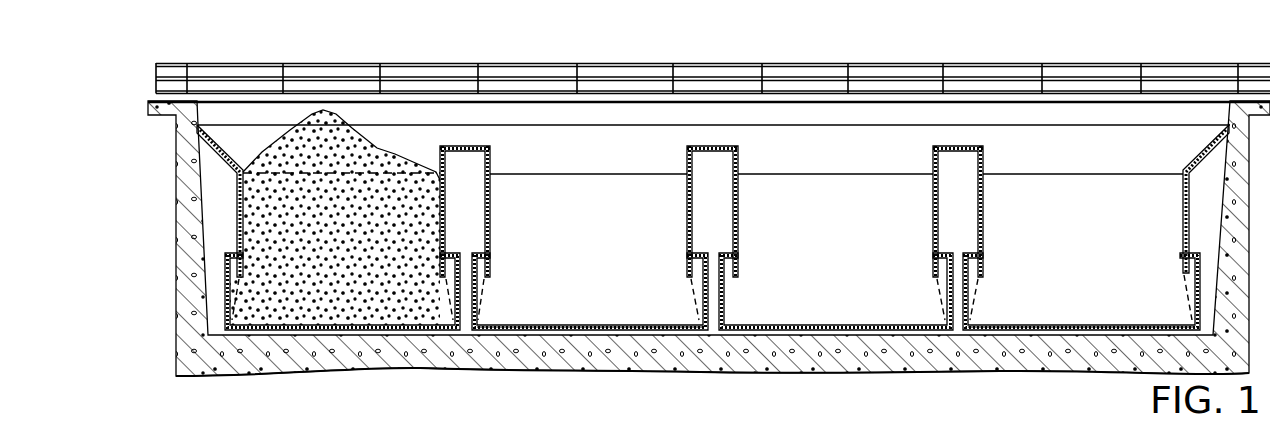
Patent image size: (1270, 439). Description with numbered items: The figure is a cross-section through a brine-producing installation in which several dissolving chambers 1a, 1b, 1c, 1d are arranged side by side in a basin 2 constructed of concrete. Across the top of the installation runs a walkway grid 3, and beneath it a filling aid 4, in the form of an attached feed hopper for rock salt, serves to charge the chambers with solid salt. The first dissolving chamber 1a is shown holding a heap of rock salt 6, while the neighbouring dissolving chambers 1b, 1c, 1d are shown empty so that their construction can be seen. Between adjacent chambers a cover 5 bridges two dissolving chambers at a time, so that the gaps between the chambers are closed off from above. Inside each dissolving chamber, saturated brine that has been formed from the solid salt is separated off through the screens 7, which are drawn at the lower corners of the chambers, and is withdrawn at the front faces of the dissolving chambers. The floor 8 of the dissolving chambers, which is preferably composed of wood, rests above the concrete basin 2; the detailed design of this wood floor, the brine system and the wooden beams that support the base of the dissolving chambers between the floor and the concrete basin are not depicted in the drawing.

The dissolving chamber 1a is at (336, 318).
The dissolving chamber 1b is at (597, 318).
The dissolving chamber 1c is at (852, 318).
The dissolving chamber 1d is at (1113, 318).
The basin 2 is at (228, 368).
The walkway grid 3 is at (775, 63).
The filling aid 4 is at (1157, 135).
The cover 5 is at (720, 146).
The heap of rock salt 6 is at (377, 148).
The screen 7 is at (233, 297).
The floor 8 is at (565, 326).